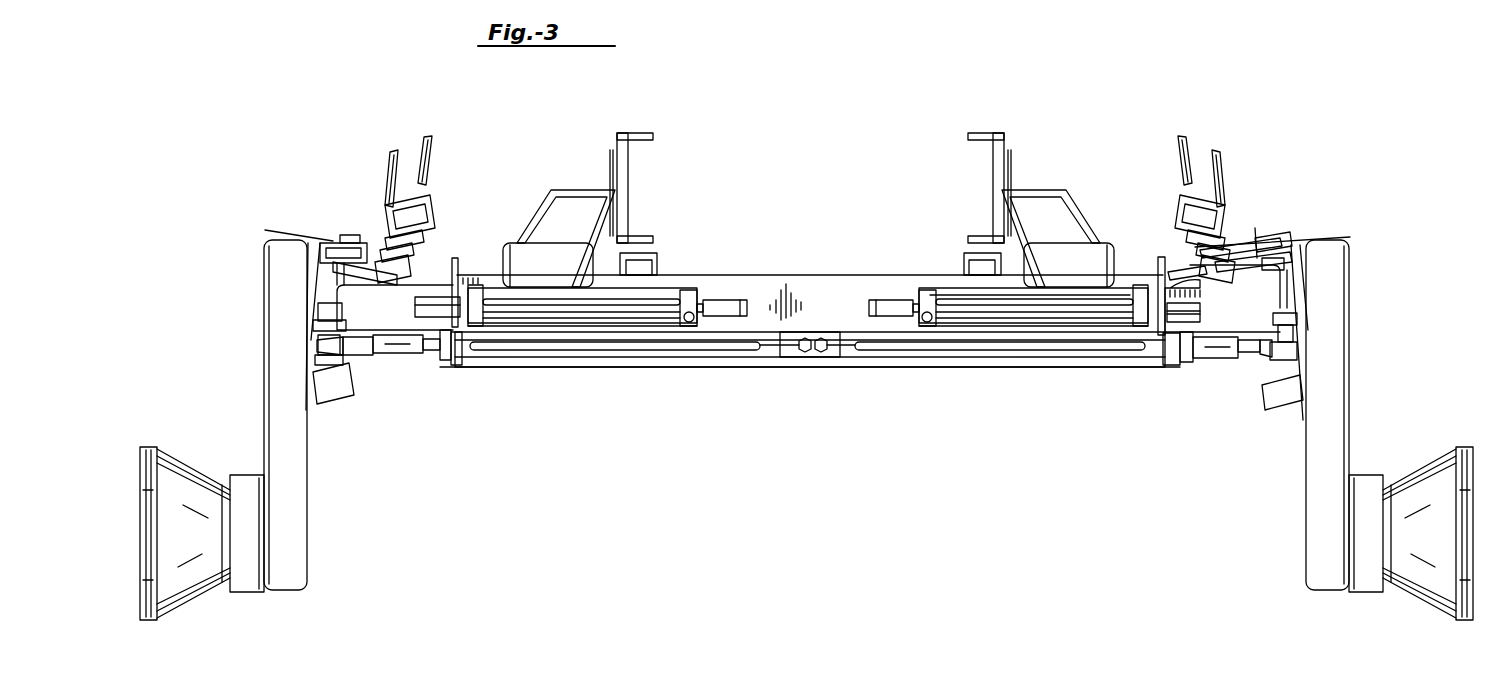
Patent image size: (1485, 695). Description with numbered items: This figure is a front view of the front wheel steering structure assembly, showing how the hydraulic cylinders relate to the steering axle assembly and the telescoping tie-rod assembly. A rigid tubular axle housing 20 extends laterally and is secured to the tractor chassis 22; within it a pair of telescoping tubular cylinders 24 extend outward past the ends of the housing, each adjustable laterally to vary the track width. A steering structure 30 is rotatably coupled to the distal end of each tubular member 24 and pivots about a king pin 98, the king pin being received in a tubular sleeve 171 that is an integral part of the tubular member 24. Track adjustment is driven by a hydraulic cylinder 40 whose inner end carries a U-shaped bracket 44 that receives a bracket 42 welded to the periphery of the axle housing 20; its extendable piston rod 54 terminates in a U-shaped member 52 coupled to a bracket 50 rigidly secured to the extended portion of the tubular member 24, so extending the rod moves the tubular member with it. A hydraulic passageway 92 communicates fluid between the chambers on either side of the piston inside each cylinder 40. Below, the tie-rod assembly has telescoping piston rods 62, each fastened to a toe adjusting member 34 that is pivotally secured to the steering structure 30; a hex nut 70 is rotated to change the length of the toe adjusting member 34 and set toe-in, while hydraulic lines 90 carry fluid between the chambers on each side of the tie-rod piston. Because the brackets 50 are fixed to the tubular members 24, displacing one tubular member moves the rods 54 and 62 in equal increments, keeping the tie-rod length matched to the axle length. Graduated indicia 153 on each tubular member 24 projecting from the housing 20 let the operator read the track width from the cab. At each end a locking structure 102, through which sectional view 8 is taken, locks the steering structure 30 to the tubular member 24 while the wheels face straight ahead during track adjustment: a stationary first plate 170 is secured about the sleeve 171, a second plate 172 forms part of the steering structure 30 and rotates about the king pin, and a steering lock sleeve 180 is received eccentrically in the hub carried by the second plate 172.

The sectional view 8— 8 is at (1245, 150).
The axle housing 20 is at (808, 275).
The tractor chassis 22 is at (643, 133).
The telescoping tubular cylinder 24 is at (1267, 313).
The steering structure 30 is at (203, 440).
The toe adjusting member 34 is at (420, 360).
The hydraulic cylinder 40 is at (665, 292).
The bracket 42 is at (745, 305).
The U-shaped bracket 44 is at (735, 300).
The bracket 50 is at (443, 300).
The U-shaped member 52 is at (437, 293).
The piston rod 54 is at (463, 278).
The telescoping piston rod 62 is at (428, 360).
The hex nut 70 is at (375, 360).
The hydraulic line 90 is at (878, 370).
The hydraulic passageway 92 is at (1017, 307).
The king pin 98 is at (1262, 255).
The locking structure 102 is at (355, 158).
The graduated indicia 153 is at (1167, 302).
The first plate 170 is at (1290, 287).
The tubular sleeve 171 is at (1257, 380).
The second plate 172 is at (1173, 287).
The steering lock sleeve 180 is at (1206, 272).